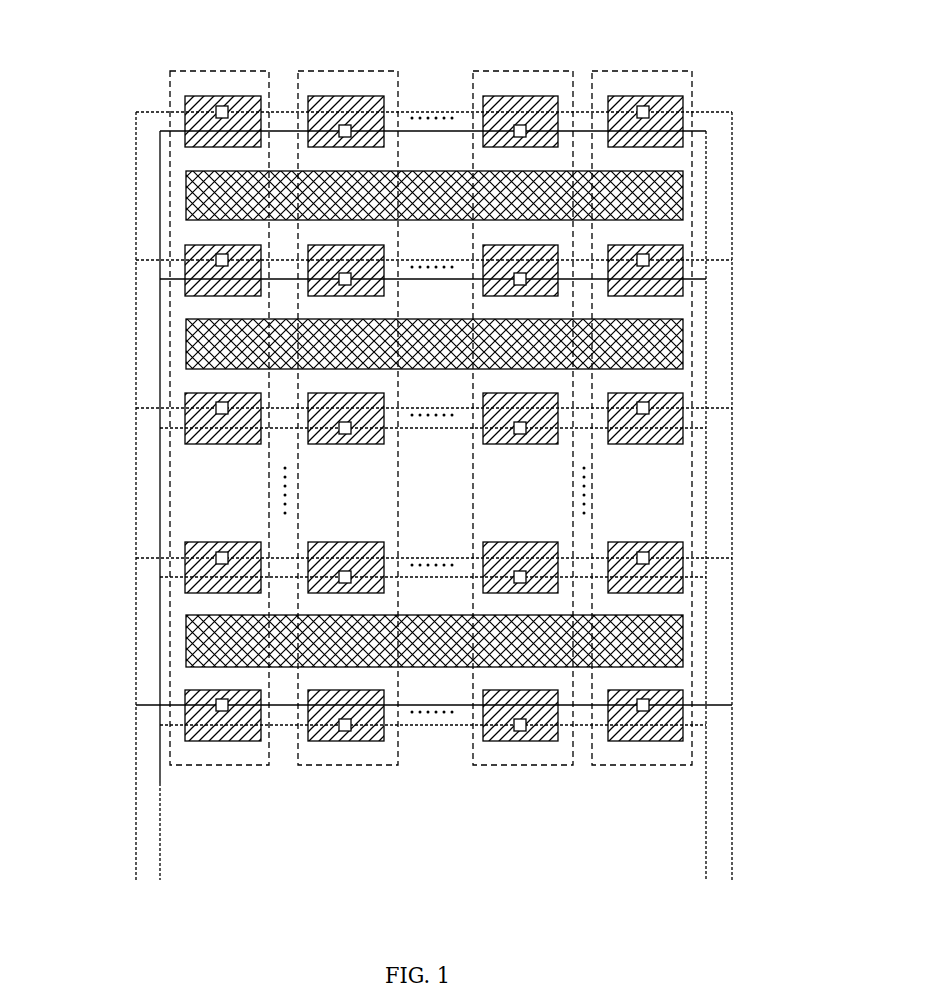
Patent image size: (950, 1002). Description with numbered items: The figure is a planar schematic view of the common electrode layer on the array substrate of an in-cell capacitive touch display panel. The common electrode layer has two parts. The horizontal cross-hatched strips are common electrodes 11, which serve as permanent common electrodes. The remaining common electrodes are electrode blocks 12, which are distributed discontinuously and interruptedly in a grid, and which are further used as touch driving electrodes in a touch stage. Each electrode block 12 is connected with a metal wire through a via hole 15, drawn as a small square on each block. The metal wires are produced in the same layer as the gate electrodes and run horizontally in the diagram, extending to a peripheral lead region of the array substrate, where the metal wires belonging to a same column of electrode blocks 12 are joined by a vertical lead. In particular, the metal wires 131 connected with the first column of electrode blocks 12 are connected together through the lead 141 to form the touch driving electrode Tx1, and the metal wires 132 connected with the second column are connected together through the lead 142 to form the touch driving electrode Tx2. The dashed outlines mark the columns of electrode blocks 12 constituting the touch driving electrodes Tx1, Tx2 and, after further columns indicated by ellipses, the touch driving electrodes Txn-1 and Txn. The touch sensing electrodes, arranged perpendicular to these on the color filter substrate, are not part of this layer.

The common electrode 11 is at (657, 193).
The electrode block 12 is at (222, 98).
The metal wire 131 is at (163, 112).
The metal wire 132 is at (283, 131).
The lead 141 is at (136, 196).
The lead 142 is at (160, 320).
The via hole 15 is at (205, 147).
The touch driving electrode Tx1 is at (190, 71).
The touch driving electrode Tx2 is at (398, 71).
The touch driving electrode Txn-1 is at (520, 71).
The touch driving electrode Txn is at (655, 71).